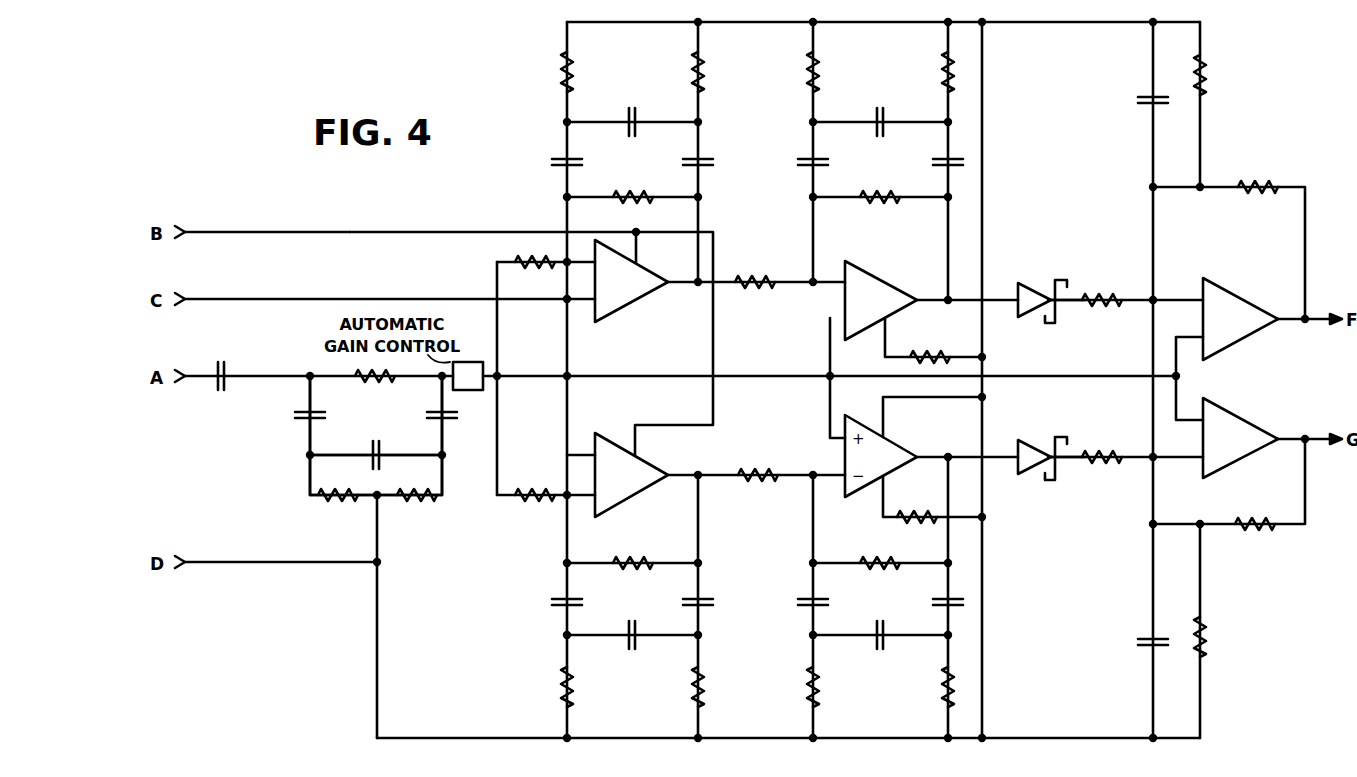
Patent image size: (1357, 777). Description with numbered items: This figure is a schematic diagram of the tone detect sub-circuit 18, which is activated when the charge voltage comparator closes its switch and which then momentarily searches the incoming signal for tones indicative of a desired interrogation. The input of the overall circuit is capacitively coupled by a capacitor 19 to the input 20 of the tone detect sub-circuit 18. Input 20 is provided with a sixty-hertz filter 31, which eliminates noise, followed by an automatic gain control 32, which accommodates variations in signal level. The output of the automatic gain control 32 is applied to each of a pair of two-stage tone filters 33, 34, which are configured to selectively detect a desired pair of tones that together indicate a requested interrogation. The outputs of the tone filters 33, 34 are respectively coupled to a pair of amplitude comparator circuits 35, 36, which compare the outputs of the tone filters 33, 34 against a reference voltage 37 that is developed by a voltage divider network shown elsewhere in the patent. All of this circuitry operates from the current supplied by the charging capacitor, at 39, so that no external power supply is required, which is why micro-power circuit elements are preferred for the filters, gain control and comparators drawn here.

The tone detect sub-circuit 18 is at (778, 329).
The capacitor 19 is at (228, 368).
The input 20 is at (273, 232).
The 60 Hz filter 31 is at (385, 419).
The automatic gain control 32 is at (476, 390).
The two-stage tone filter 33 is at (767, 249).
The two-stage tone filter 34 is at (762, 544).
The amplitude comparator circuit 35 is at (1252, 338).
The amplitude comparator circuit 36 is at (1240, 419).
The reference voltage 37 is at (1096, 374).
The current supply point 39 is at (408, 232).